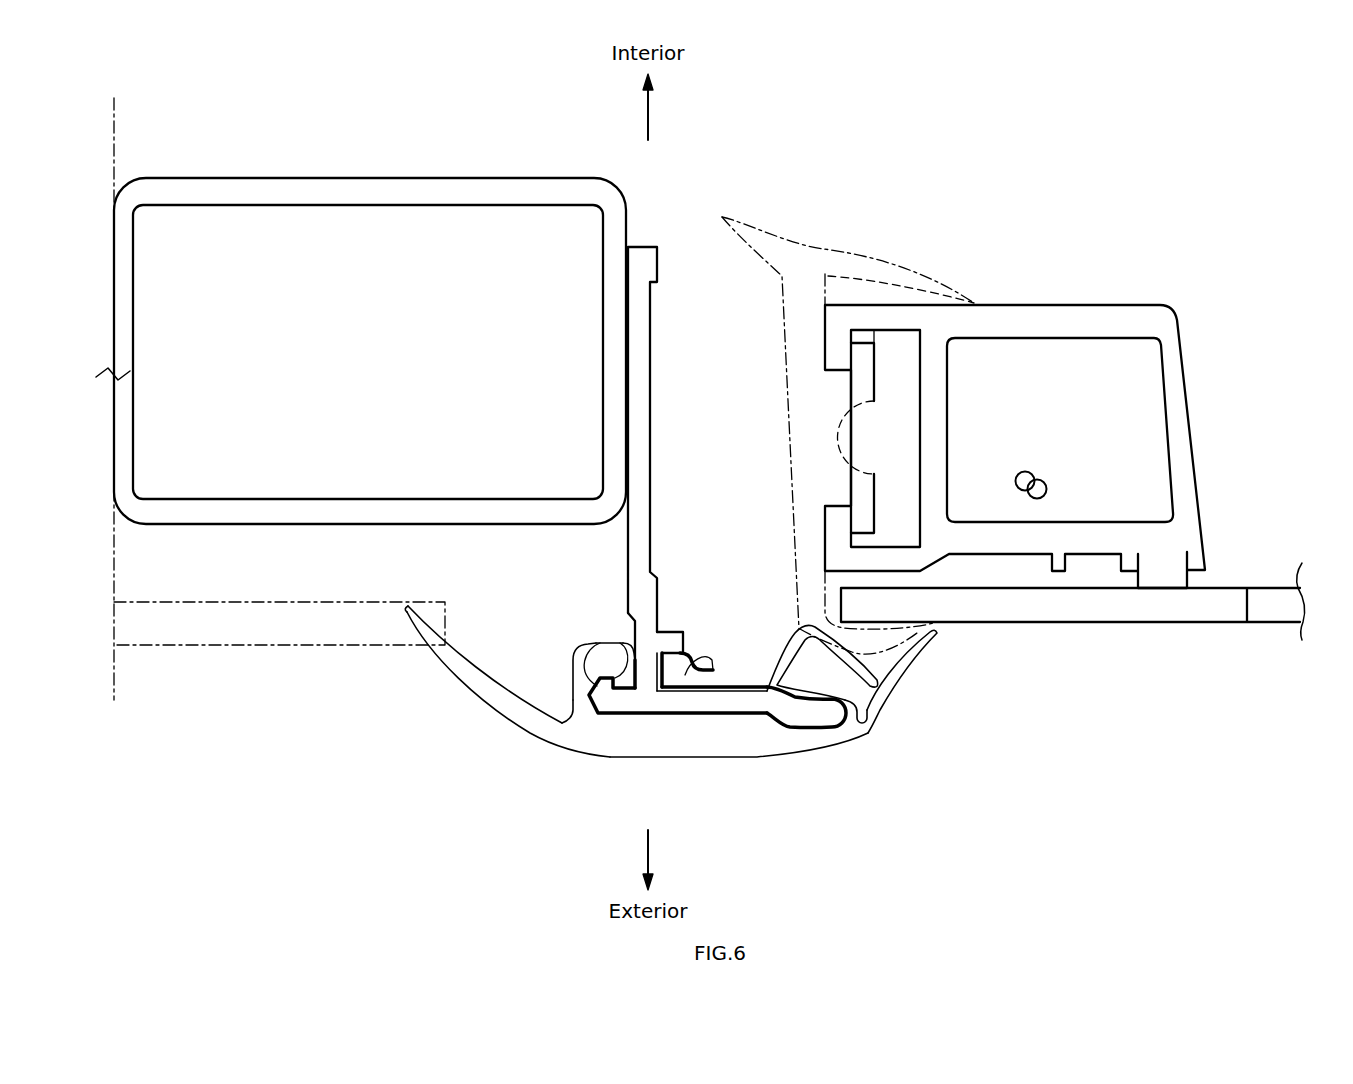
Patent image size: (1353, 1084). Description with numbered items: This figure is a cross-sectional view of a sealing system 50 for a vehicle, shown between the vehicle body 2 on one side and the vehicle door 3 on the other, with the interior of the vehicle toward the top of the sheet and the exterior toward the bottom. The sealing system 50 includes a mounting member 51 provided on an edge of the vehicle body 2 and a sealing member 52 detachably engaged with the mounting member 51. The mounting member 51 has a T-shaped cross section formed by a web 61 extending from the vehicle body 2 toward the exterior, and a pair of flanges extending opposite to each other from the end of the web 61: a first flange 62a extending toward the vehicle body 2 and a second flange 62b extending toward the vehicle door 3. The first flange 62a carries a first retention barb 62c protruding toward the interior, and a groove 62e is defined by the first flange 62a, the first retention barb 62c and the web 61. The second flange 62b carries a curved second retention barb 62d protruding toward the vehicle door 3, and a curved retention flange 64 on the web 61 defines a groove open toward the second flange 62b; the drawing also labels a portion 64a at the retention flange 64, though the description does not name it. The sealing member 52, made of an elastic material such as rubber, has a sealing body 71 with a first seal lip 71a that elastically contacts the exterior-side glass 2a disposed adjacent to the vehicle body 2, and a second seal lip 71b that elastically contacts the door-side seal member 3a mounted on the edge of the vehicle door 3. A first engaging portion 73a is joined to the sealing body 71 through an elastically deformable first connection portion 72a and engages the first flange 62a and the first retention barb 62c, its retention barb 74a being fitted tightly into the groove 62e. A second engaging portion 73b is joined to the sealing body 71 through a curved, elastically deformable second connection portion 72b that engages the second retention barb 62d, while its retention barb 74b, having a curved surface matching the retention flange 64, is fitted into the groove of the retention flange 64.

The vehicle body 2 is at (452, 168).
The exterior-side glass 2a is at (315, 650).
The vehicle door 3 is at (1148, 632).
The door-side seal member 3a is at (843, 246).
The sealing system 50 is at (742, 174).
The mounting member 51 is at (688, 462).
The sealing member 52 is at (706, 772).
The web 61 is at (653, 595).
The retention flange 64 is at (680, 658).
The engaging projection tip 64a is at (708, 672).
The first flange 62a is at (620, 705).
The second flange 62b is at (745, 707).
The first retention barb 62c is at (583, 650).
The second retention barb 62d is at (827, 718).
The groove 62e is at (593, 641).
The sealing body 71 is at (688, 758).
The first seal lip 71a is at (447, 668).
The second seal lip 71b is at (913, 657).
The first connection portion 72a is at (580, 696).
The second connection portion 72b is at (853, 703).
The first engaging portion 73a is at (597, 643).
The second engaging portion 73b is at (753, 675).
The retention barb 74a is at (623, 680).
The retention barb 74b is at (683, 642).